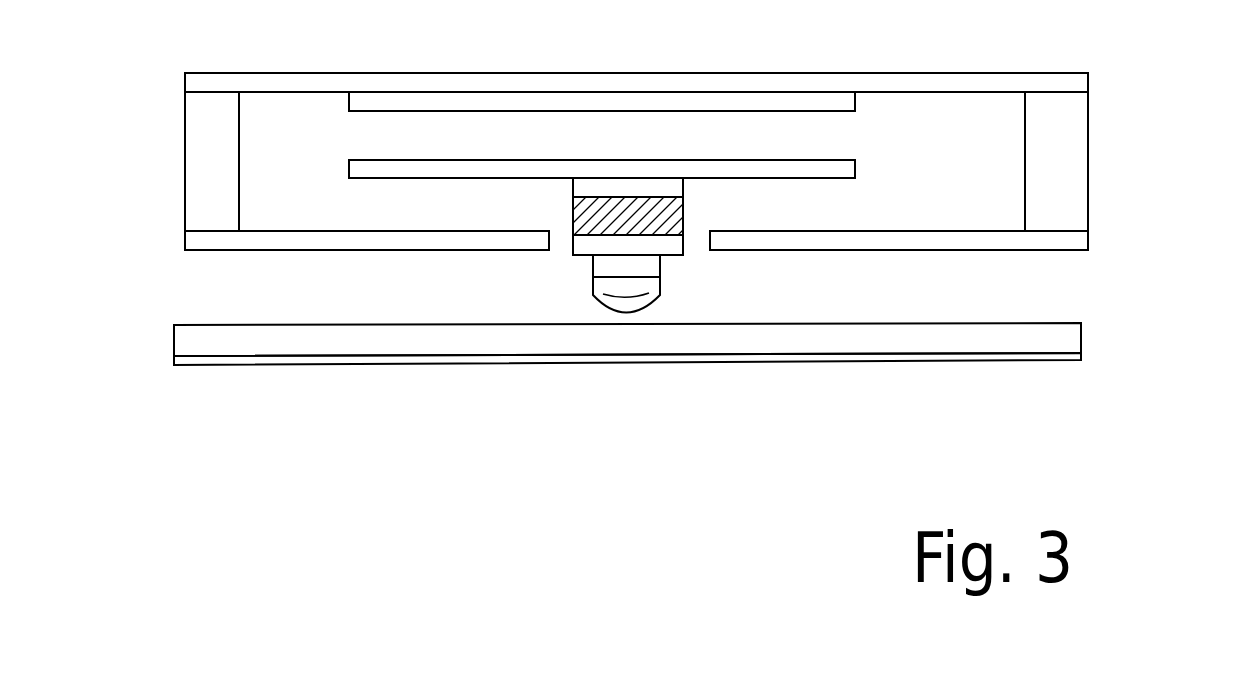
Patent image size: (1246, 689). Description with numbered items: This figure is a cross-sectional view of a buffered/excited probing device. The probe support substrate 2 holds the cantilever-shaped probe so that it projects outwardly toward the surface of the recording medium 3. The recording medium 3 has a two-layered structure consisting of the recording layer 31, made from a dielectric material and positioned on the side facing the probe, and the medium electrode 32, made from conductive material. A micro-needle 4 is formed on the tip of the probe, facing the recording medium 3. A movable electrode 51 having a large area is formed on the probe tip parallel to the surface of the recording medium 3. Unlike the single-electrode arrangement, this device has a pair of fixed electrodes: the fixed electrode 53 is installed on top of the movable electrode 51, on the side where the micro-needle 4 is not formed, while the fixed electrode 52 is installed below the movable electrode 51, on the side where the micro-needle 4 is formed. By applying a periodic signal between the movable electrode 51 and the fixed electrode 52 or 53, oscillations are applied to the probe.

The probe support substrate 2 is at (1090, 129).
The recording medium 3 is at (611, 339).
The recording layer 31 is at (1055, 323).
The medium electrode 32 is at (1045, 362).
The micro-needle 4 is at (660, 277).
The movable electrode 51 is at (437, 160).
The fixed electrode 52 is at (912, 231).
The fixed electrode 53 is at (702, 112).